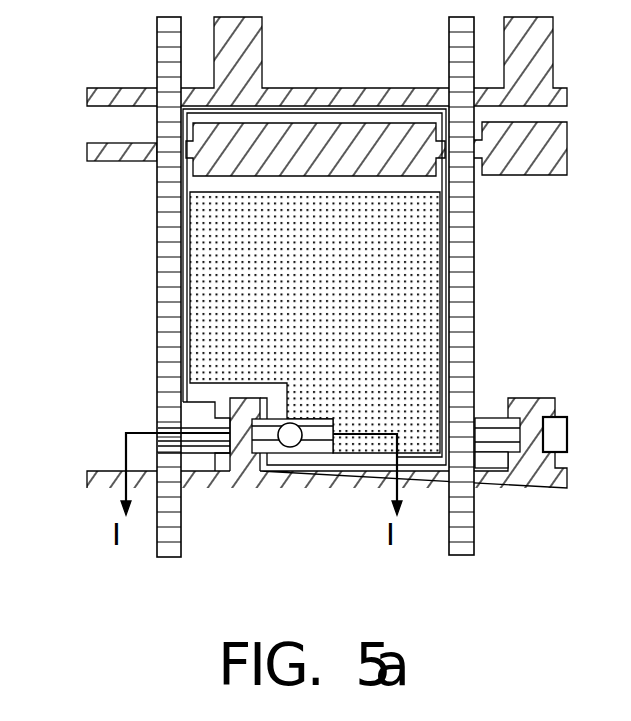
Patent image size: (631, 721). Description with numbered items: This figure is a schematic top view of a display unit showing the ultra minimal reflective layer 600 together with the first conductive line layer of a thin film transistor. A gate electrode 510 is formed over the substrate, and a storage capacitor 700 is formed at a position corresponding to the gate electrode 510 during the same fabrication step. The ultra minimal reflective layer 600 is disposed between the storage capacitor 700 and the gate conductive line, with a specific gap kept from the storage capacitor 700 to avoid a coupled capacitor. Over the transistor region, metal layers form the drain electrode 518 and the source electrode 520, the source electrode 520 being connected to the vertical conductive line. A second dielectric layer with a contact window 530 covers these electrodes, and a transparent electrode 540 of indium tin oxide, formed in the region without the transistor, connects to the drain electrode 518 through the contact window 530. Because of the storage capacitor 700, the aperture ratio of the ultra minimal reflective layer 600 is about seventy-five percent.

The gate electrode 510 is at (248, 457).
The drain electrode 518 is at (311, 450).
The source electrode 520 is at (192, 431).
The contact window 530 is at (277, 449).
The transparent electrode 540 is at (356, 489).
The ultra minimal reflective layer 600 is at (203, 315).
The storage capacitor 700 is at (237, 163).